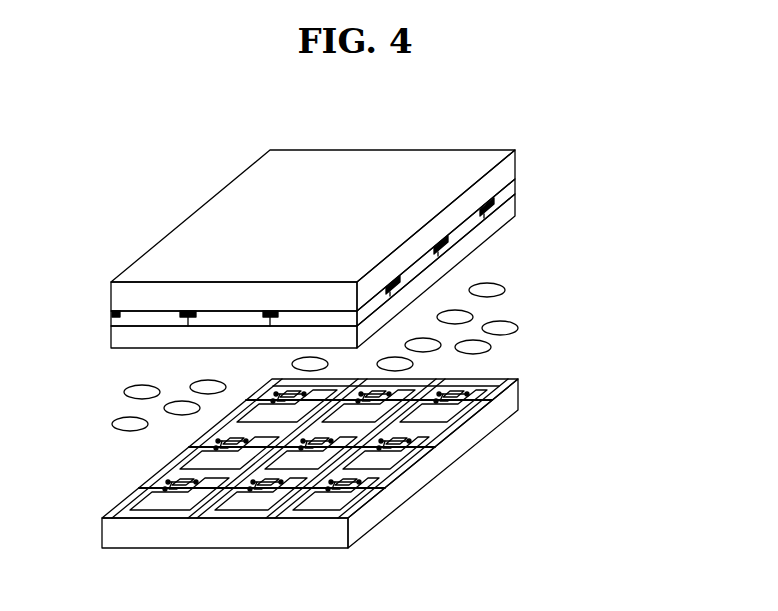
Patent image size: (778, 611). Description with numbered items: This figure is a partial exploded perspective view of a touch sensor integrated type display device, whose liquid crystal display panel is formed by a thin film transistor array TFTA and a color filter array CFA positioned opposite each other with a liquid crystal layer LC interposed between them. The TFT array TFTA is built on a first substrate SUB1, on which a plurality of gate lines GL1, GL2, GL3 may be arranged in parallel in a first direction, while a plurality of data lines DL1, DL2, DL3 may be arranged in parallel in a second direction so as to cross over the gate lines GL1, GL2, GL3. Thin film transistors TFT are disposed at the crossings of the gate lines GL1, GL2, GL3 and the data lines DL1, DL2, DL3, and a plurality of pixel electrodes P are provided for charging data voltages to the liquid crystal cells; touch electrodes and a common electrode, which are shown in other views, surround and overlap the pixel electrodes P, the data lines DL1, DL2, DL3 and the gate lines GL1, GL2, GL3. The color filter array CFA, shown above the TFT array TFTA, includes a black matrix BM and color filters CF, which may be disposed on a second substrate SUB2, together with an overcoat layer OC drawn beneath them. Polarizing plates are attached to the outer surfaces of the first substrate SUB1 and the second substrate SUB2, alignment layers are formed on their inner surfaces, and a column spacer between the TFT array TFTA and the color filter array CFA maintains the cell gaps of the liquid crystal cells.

The color filter array CFA is at (335, 230).
The second substrate SUB2 is at (510, 168).
The color filter CF is at (512, 190).
The overcoat layer OC is at (512, 210).
The black matrix BM is at (112, 312).
The liquid crystal layer LC is at (500, 293).
The thin film transistor array TFTA is at (359, 477).
The first substrate SUB1 is at (510, 398).
The data line DL1 is at (130, 498).
The data line DL2 is at (198, 512).
The data line DL3 is at (273, 512).
The gate line GL1 is at (345, 489).
The gate line GL2 is at (400, 449).
The gate line GL3 is at (452, 403).
The pixel electrode P is at (372, 482).
The thin film transistor TFT is at (318, 494).